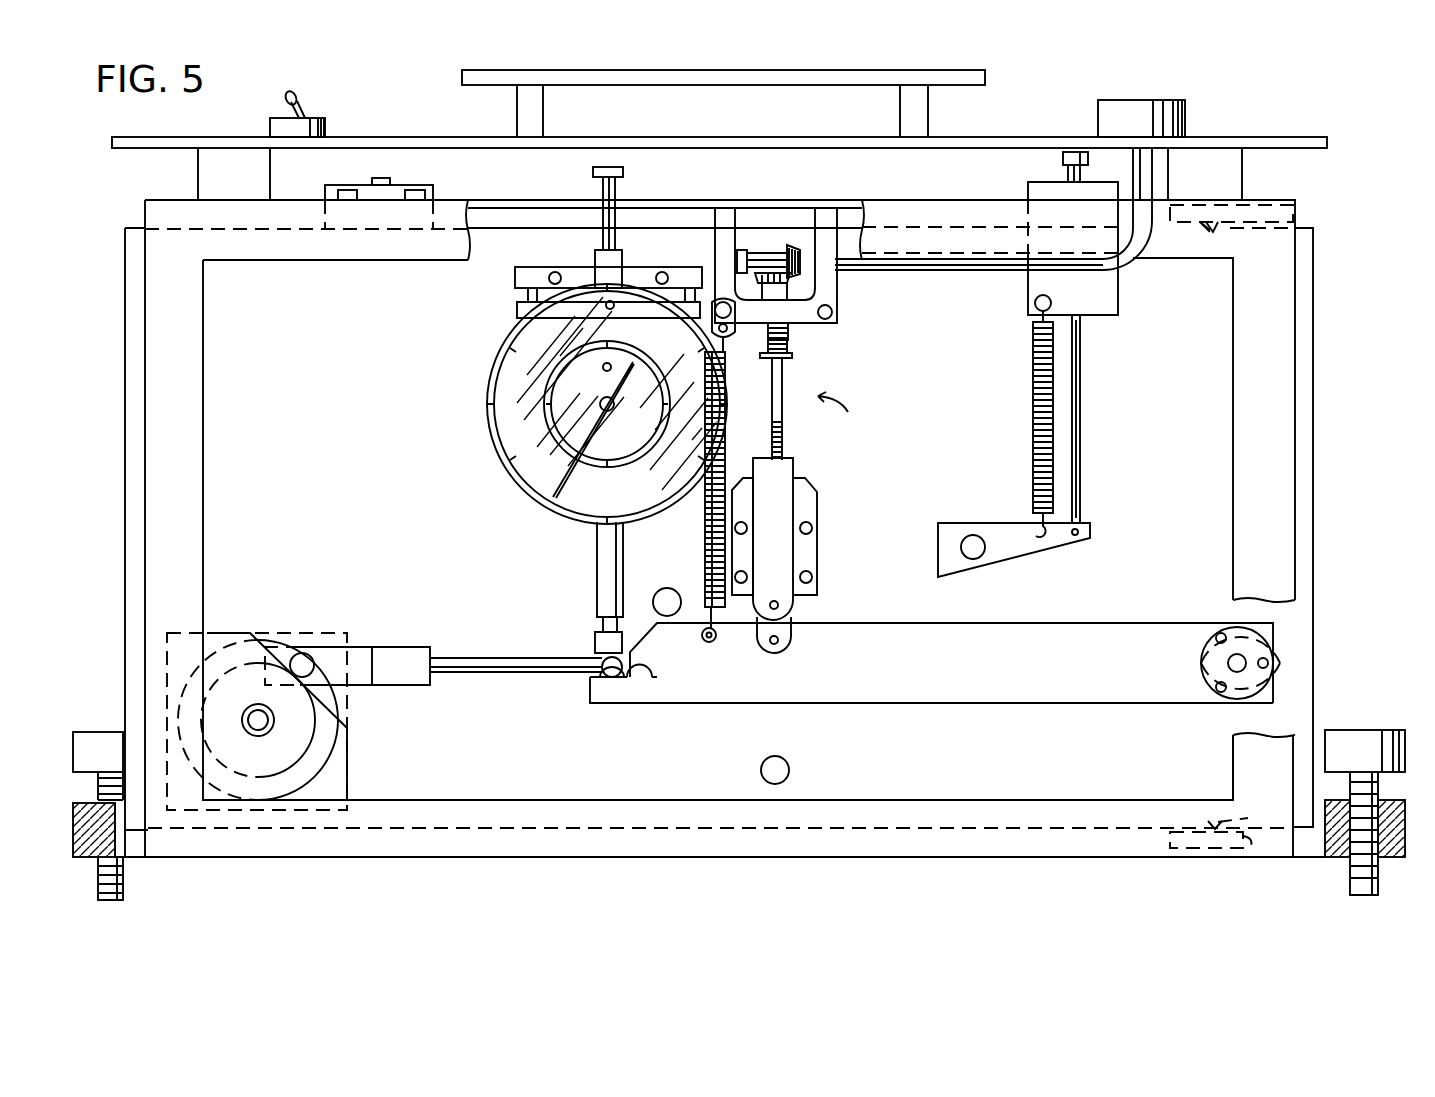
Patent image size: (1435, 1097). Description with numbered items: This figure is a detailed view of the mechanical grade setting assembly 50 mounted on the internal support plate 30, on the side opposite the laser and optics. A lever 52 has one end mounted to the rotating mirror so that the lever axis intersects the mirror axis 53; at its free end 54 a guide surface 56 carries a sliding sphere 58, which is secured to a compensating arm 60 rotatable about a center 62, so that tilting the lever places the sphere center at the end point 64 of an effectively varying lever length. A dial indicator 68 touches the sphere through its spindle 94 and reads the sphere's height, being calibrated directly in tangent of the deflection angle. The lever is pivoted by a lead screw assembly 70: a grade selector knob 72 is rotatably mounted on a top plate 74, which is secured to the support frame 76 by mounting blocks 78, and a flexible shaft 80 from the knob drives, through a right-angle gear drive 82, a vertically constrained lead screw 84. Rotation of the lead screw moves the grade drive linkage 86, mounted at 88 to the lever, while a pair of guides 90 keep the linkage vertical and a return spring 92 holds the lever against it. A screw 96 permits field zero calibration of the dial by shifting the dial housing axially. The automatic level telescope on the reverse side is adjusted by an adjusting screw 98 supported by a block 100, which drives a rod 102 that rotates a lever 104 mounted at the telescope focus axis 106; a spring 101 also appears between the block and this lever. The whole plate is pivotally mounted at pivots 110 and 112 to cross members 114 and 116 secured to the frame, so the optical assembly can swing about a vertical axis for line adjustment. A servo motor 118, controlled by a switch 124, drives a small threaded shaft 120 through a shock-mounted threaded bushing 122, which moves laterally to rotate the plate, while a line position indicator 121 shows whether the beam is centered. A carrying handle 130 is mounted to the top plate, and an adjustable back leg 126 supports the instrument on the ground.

The internal support plate 30 is at (1313, 455).
The grade setting assembly 50 is at (950, 755).
The lever 52 is at (997, 640).
The axis of the rotatable mirror 53 is at (1230, 663).
The free end of lever 54 is at (713, 703).
The guide surface 56 is at (645, 690).
The sphere 58 is at (601, 660).
The compensating arm 60 is at (455, 660).
The center 62 is at (302, 654).
The end point 64 is at (598, 678).
The dial indicator 68 is at (497, 459).
The lead screw assembly 70 is at (845, 410).
The grade selector knob 72 is at (1177, 112).
The top plate 74 is at (1297, 137).
The support frame 76 is at (1313, 252).
The mounting blocks 78 is at (198, 173).
The flexible shaft 80 is at (959, 272).
The right-angle gear drive 82 is at (787, 243).
The lead screw 84 is at (785, 382).
The grade drive linkage 86 is at (795, 460).
The mounting of linkage to lever 88 is at (780, 605).
The guides 90 is at (710, 503).
The return spring 92 is at (704, 545).
The dial indicator spindle 94 is at (597, 577).
The screw 96 is at (622, 260).
The adjusting screw 98 is at (1062, 157).
The block 100 is at (1028, 188).
The spring 101 is at (1032, 400).
The rod 102 is at (1082, 410).
The lever 104 is at (1022, 548).
The axis of the telescope focus 106 is at (973, 538).
The pivot 110 is at (1222, 817).
The pivot 112 is at (1212, 235).
The cross member 114 is at (1288, 207).
The cross member 116 is at (1250, 848).
The servo motor 118 is at (333, 752).
The threaded shaft 120 is at (260, 725).
The line position indicator 121 is at (433, 185).
The threaded bushing 122 is at (337, 776).
The switch 124 is at (303, 109).
The back leg 126 is at (125, 883).
The handle 130 is at (470, 70).